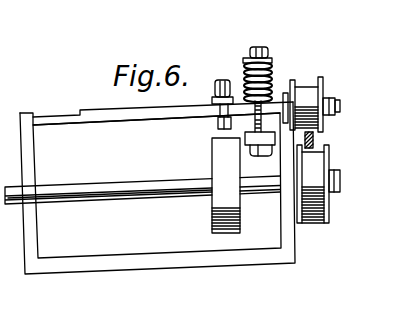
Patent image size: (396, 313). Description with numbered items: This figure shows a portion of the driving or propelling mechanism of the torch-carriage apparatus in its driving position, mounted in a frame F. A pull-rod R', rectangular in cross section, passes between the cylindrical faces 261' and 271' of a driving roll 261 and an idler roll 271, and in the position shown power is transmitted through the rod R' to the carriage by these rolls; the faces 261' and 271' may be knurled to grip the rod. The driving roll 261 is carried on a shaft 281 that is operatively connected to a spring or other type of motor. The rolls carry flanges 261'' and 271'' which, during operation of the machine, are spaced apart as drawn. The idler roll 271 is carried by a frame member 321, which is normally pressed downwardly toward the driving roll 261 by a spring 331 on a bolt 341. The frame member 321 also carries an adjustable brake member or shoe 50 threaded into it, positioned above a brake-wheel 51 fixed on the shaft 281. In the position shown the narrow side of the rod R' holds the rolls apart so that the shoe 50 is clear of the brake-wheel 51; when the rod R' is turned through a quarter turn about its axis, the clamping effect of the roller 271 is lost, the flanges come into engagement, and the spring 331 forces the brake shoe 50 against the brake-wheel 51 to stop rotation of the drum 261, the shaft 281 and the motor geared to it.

The frame F is at (145, 268).
The frame member 321 is at (78, 124).
The brake member or shoe 50 is at (215, 130).
The brake-wheel 51 is at (212, 158).
The shaft 281 is at (92, 200).
The bolt 341 is at (272, 33).
The spring 331 is at (275, 72).
The idler roll 271 is at (331, 106).
The cylindrical face of idler roll 271' is at (340, 107).
The flange of idler roll 271'' is at (352, 89).
The pull-rod R' is at (335, 144).
The driving roll 261 is at (339, 184).
The flange of driving roll 261'' is at (342, 193).
The cylindrical face of driving roll 261' is at (326, 238).